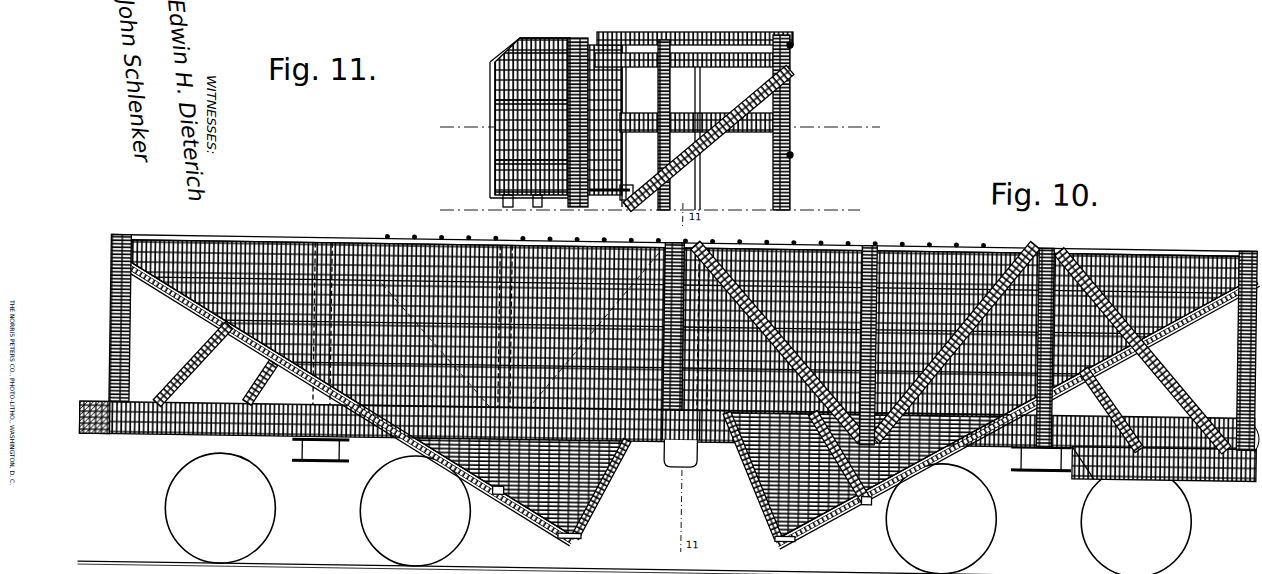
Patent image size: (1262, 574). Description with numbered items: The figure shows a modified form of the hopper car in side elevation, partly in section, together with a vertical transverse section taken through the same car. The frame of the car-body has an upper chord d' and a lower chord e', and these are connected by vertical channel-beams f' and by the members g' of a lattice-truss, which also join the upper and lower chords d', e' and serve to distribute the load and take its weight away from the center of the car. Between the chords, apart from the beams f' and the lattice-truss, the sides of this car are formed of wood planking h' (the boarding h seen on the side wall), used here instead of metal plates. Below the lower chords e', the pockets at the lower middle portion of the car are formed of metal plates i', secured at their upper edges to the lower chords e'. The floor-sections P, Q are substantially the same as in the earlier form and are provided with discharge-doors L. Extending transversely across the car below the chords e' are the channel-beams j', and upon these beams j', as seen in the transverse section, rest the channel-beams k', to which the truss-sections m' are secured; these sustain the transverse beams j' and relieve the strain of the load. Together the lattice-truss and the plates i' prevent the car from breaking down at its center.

In FIG. 10, the upper chord d' is at (684, 235).
In FIG. 10, the side sheathing boards h is at (397, 325).
In FIG. 10, the wood planking h' is at (960, 333).
In FIG. 10, the lower chord e' is at (668, 441).
In FIG. 10, the metal plates i' is at (707, 475).
In FIG. 10, the floor-section P is at (497, 505).
In FIG. 10, the door L is at (676, 523).
In FIG. 11, the channel-beam j' is at (520, 122).
In FIG. 10, the channel-beam j' is at (676, 369).
In FIG. 10, the floor-section Q is at (855, 510).
In FIG. 10, the lattice-truss member g' is at (687, 392).
In FIG. 10, the vertical channel-beam f' is at (956, 347).
In FIG. 11, the channel-beam k' is at (611, 205).
In FIG. 11, the truss-section m' is at (708, 138).